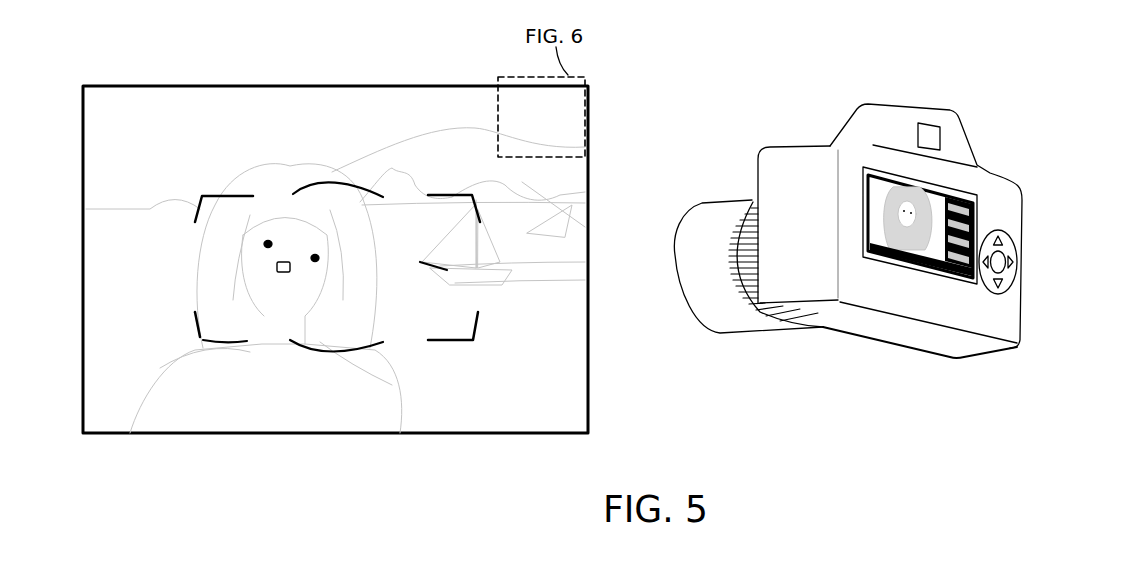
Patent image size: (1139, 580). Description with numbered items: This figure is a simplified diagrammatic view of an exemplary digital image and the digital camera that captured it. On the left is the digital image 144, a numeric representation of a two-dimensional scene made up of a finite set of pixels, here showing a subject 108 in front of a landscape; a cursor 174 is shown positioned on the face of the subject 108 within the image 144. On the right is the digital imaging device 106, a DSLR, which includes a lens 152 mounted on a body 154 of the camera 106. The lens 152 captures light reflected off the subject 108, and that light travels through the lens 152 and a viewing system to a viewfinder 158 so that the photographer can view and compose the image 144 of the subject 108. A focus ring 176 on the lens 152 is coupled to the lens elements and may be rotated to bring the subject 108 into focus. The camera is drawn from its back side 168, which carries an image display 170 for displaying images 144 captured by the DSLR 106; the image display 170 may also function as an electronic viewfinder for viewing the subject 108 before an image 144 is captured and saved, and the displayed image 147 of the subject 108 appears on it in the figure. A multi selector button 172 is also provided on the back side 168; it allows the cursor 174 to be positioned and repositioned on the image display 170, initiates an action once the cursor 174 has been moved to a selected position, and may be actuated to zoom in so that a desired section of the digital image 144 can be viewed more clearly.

The digital image 144 is at (66, 368).
The cursor 174 is at (283, 277).
The image on display screen 147 is at (866, 220).
The body 154 is at (816, 234).
The viewfinder 158 is at (942, 145).
The digital imaging device 106 is at (1049, 180).
The multi selector button 172 is at (1006, 247).
The lens 152 is at (740, 337).
The focus ring 176 is at (795, 332).
The subject 108 is at (897, 222).
The image display 170 is at (928, 258).
The back side 168 is at (1005, 324).